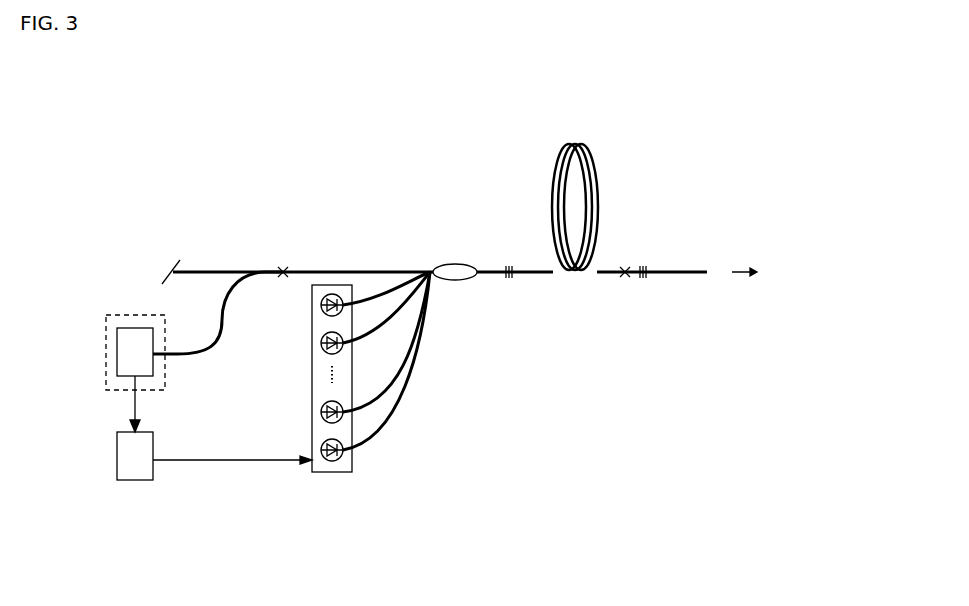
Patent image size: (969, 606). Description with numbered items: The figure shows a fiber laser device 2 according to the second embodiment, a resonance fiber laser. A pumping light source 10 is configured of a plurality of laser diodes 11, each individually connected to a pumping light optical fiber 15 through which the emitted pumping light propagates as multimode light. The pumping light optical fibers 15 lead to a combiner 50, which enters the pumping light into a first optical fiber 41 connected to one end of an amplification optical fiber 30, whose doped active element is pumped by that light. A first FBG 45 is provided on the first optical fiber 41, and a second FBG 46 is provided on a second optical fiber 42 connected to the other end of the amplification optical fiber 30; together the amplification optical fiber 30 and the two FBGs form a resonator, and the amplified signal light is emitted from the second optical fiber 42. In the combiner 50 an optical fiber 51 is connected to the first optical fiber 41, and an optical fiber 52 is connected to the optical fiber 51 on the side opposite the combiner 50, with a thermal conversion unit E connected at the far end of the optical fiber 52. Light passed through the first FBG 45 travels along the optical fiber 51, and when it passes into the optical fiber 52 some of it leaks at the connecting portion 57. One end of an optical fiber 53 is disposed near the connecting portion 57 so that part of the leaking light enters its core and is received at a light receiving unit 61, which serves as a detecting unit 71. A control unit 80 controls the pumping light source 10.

The fiber laser device 2 is at (642, 126).
The pumping light source 10 is at (344, 407).
The laser diodes 11 is at (323, 467).
The pumping light optical fibers 15 is at (378, 402).
The amplification optical fiber 30 is at (555, 271).
The first optical fiber 41 is at (490, 271).
The second optical fiber 42 is at (657, 271).
The first FBG 45 is at (509, 278).
The second FBG 46 is at (643, 278).
The combiner 50 is at (460, 273).
The optical fiber 51 is at (377, 271).
The optical fiber 52 is at (230, 271).
The optical fiber 53 is at (224, 325).
The connecting portion 57 is at (282, 265).
The light receiving unit 61 is at (122, 345).
The detecting unit 71 is at (120, 325).
The control unit 80 is at (123, 449).
The thermal conversion unit E is at (172, 267).